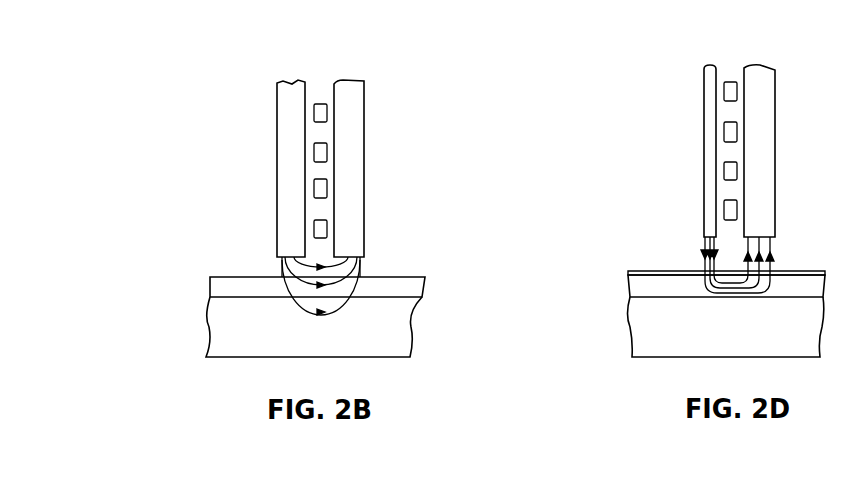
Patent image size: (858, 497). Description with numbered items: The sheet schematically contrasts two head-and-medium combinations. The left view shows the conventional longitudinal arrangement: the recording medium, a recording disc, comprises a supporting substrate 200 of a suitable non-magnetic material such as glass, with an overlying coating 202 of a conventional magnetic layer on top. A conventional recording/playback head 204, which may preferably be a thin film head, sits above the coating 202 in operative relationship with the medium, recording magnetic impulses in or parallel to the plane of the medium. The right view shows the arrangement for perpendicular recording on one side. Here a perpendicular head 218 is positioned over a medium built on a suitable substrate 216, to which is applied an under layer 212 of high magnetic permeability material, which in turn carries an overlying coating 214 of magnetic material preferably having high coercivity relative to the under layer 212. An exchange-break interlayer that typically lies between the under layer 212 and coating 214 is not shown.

In FIG. 2B, the supporting substrate 200 is at (222, 346).
In FIG. 2B, the overlying coating 202 is at (245, 282).
In FIG. 2B, the recording/playback head 204 is at (277, 166).
In FIG. 2D, the under layer 212 is at (637, 287).
In FIG. 2D, the overlying coating 214 is at (652, 270).
In FIG. 2D, the substrate 216 is at (703, 345).
In FIG. 2D, the perpendicular head 218 is at (775, 175).